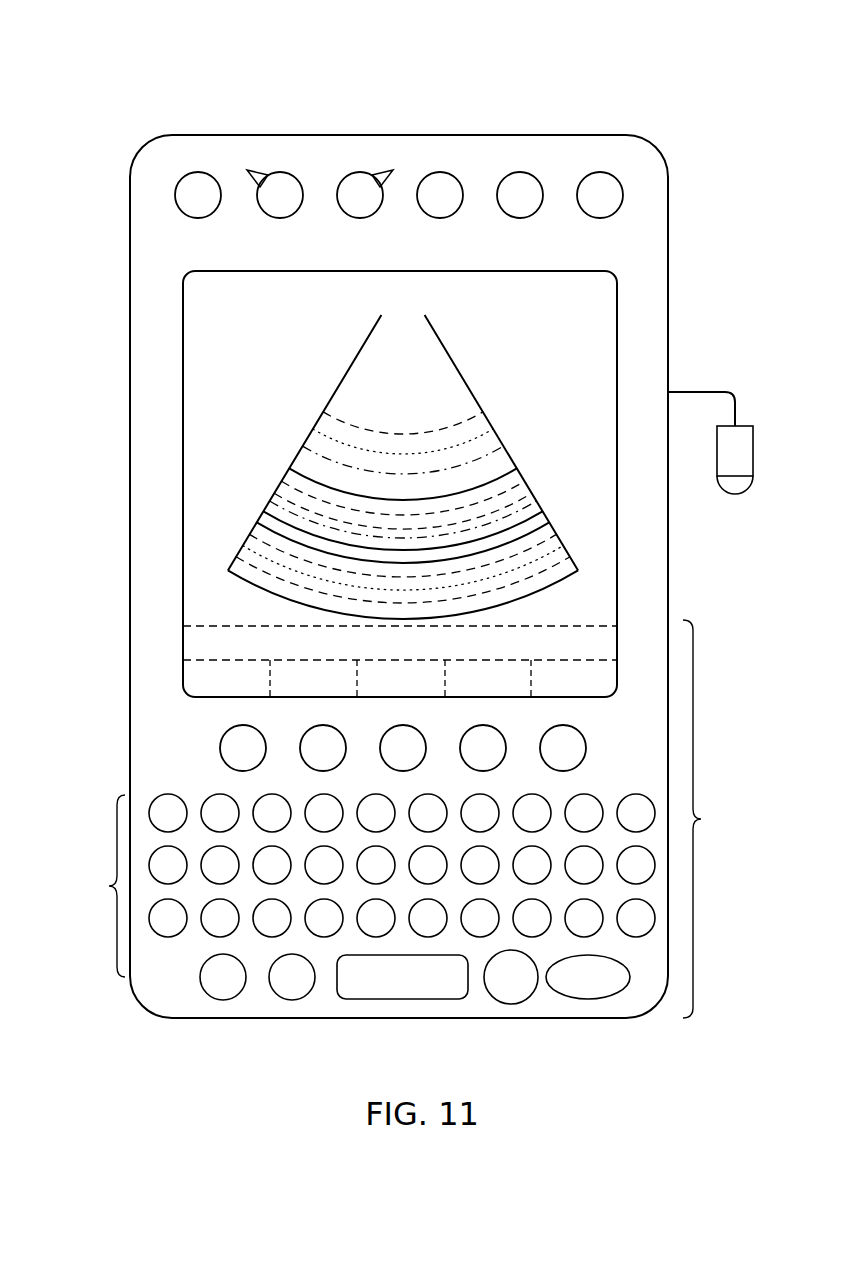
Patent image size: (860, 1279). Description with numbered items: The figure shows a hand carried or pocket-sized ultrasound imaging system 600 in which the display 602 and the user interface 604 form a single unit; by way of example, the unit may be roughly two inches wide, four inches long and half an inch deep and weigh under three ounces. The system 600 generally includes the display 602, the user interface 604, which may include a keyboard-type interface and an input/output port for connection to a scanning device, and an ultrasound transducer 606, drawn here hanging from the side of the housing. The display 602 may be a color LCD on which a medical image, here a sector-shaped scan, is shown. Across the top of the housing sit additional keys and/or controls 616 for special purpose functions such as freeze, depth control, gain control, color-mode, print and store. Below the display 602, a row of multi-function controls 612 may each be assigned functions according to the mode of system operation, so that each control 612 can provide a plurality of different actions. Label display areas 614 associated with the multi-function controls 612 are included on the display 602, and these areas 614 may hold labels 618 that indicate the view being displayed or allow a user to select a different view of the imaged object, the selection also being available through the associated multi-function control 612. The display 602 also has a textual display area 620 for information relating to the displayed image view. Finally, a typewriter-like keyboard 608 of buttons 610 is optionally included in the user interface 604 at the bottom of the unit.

The pocket-sized ultrasound imaging system 600 is at (143, 58).
The display 602 is at (618, 343).
The user interface 604 is at (413, 850).
The ultrasound transducer 606 is at (746, 420).
The typewriter-like keyboard 608 is at (360, 891).
The buttons 610 is at (167, 794).
The multi-function controls 612 is at (260, 733).
The label display areas 614 is at (194, 655).
The keys and/or controls for special purpose functions 616 is at (198, 172).
The labels 618 is at (230, 660).
The textual display area 620 is at (207, 621).